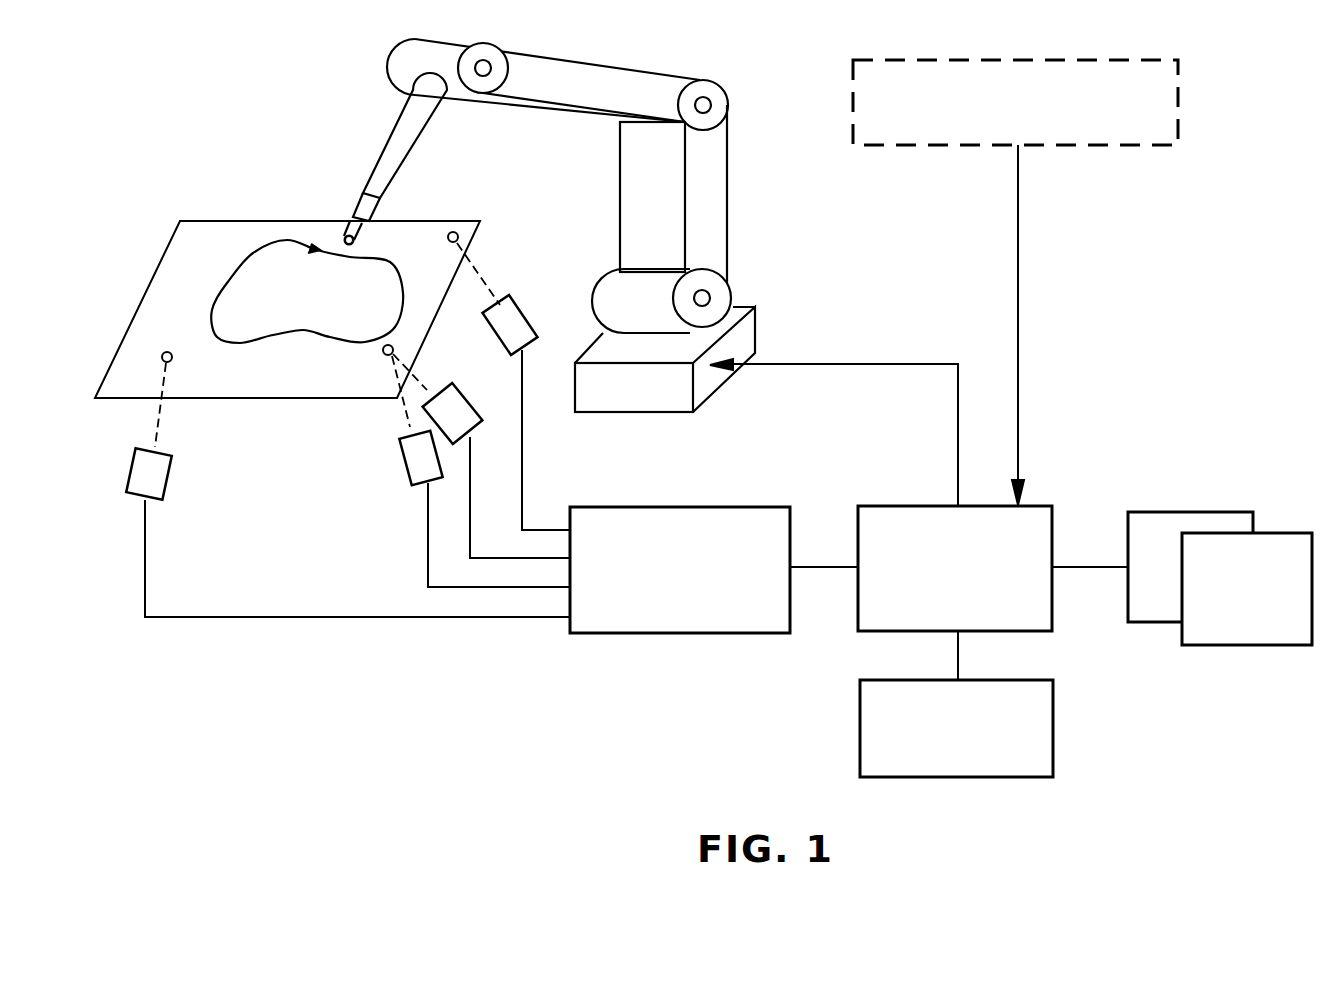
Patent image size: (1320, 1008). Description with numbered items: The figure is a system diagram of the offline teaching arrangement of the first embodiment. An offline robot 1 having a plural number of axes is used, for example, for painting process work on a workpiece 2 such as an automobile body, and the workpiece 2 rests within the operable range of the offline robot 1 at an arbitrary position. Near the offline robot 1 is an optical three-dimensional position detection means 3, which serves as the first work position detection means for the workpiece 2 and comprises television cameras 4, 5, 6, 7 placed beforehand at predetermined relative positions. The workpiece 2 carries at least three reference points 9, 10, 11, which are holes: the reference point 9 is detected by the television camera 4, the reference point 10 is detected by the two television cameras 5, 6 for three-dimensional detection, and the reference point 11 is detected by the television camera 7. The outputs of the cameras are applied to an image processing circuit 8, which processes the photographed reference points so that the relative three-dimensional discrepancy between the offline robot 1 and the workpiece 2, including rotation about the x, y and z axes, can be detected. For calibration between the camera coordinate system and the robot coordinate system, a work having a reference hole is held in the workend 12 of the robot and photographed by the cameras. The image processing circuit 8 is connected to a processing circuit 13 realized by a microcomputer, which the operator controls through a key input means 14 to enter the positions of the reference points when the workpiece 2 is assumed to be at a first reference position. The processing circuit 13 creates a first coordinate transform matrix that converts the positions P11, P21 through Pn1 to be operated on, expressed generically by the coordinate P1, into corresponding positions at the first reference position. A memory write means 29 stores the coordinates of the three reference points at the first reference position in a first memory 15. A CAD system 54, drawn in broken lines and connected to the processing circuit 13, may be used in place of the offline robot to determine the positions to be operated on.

The offline robot 1 is at (718, 183).
The workpiece 2 is at (215, 221).
The optical three-dimensional position detection means 3 is at (526, 286).
The television camera 4 is at (130, 470).
The television camera 5 is at (405, 468).
The television camera 6 is at (455, 388).
The television camera 7 is at (527, 317).
The image processing circuit 8 is at (695, 507).
The reference point 9 is at (167, 352).
The reference point 10 is at (383, 352).
The reference point 11 is at (456, 231).
The workend 12 is at (356, 241).
The processing circuit 13 is at (1038, 505).
The key input means 14 is at (1053, 705).
The first memory 15 is at (1248, 645).
The memory write means 29 is at (1187, 512).
The CAD system 54 is at (1178, 130).
The position to be operated on Pn1 is at (232, 343).
The position to be operated on P11 is at (273, 335).
The position to be operated on P21 is at (303, 330).
The coordinate P1 is at (335, 337).